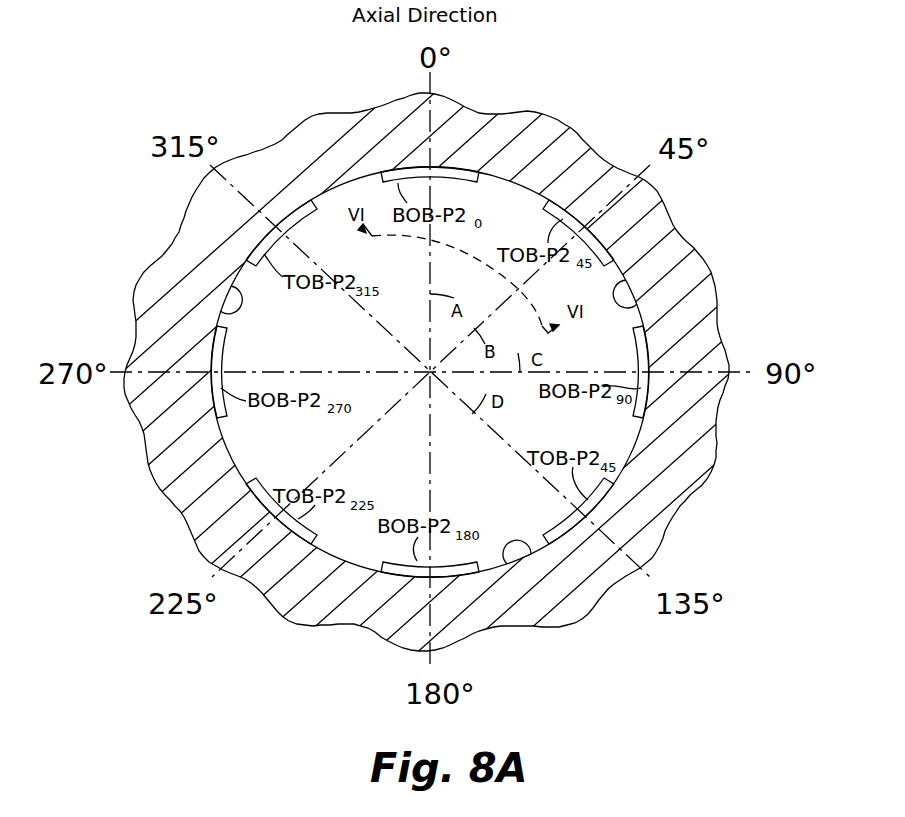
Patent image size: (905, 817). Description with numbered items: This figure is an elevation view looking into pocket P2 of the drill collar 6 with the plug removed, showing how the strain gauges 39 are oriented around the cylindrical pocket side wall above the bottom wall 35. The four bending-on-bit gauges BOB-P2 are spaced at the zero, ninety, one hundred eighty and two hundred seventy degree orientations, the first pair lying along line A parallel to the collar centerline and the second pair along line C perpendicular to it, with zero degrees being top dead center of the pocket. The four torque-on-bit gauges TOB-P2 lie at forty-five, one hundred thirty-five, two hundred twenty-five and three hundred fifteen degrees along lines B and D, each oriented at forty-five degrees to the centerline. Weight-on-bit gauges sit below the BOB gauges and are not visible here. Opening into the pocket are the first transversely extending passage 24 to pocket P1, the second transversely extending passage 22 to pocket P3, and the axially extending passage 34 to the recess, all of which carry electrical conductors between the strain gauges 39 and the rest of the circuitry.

The drill collar 6 is at (556, 108).
The second transversely extending passage 22 is at (614, 302).
The first transversely extending passage 24 is at (240, 303).
The axially extending passage 34 is at (504, 548).
The bottom wall 35 is at (527, 190).
The strain gauge 39 is at (289, 224).